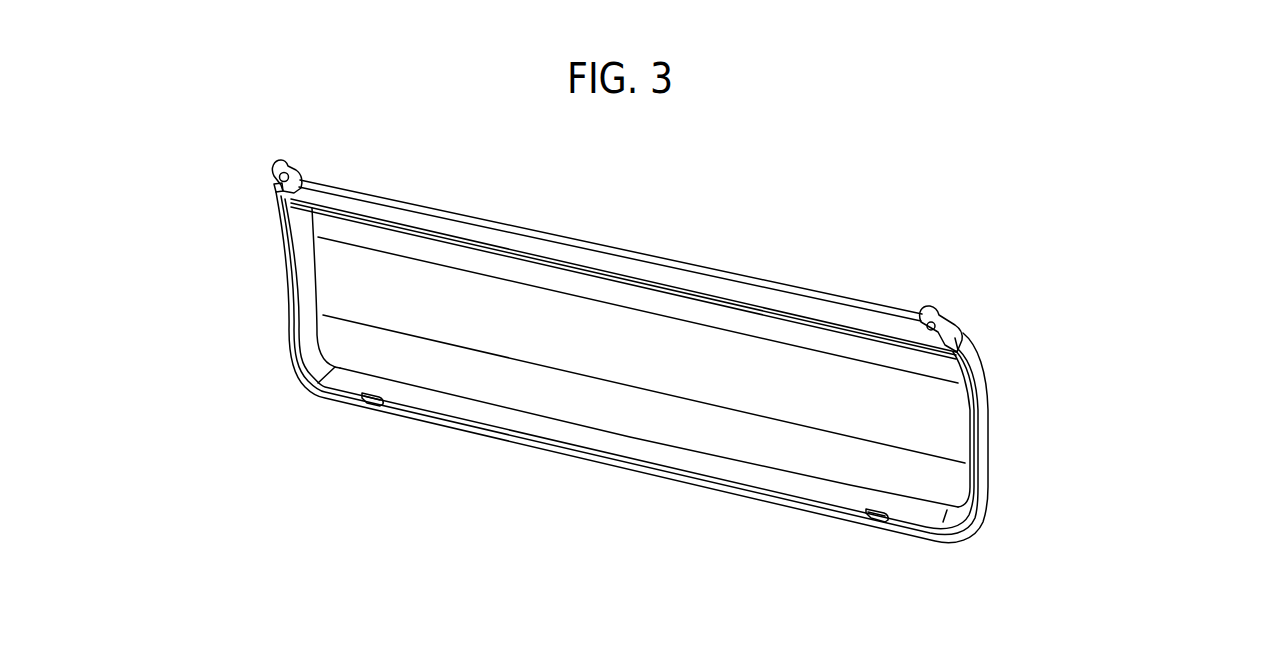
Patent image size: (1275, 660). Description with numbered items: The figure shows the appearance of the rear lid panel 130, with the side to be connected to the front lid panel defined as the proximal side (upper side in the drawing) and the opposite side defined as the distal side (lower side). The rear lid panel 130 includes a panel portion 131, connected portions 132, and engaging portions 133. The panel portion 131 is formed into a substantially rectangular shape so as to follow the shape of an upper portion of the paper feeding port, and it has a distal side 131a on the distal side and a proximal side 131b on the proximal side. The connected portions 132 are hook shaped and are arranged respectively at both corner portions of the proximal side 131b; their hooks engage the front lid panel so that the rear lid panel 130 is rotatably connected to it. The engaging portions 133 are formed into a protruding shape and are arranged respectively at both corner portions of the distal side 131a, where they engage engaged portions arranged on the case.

The rear lid panel 130 is at (713, 212).
The panel portion 131 is at (498, 290).
The distal side 131a is at (587, 462).
The proximal side 131b is at (594, 256).
The connected portion 132 is at (293, 163).
The engaging portion 133 is at (367, 407).